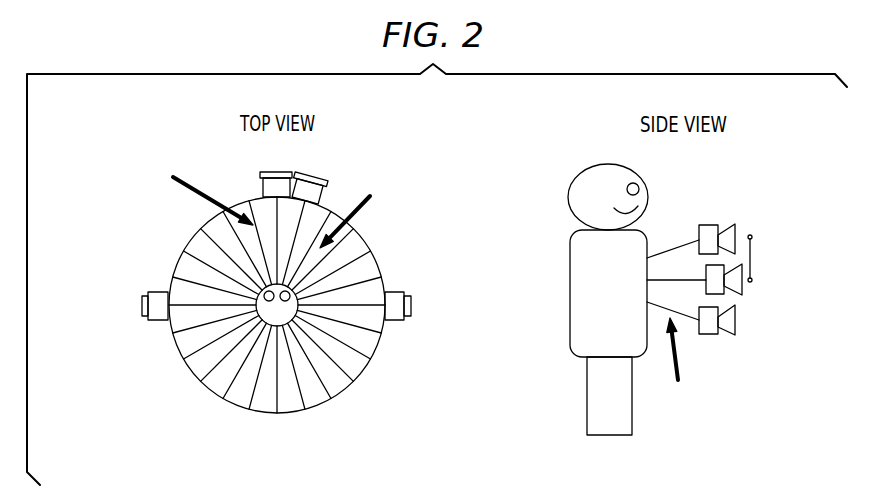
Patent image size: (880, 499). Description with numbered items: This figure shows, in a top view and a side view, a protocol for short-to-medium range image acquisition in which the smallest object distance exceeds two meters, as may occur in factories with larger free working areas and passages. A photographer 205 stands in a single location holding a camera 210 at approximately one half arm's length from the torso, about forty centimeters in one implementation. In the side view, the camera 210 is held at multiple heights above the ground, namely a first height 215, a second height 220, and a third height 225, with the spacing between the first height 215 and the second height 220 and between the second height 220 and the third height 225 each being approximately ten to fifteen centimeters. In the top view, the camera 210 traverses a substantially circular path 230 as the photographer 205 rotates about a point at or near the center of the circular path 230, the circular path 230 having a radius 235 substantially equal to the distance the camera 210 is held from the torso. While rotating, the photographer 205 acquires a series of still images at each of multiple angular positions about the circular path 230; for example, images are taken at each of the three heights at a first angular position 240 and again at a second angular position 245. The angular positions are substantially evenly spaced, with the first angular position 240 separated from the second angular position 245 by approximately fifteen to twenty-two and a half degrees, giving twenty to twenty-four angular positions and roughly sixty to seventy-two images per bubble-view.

The photographer 205 is at (287, 312).
The camera 210 is at (394, 291).
The first height 215 is at (752, 235).
The second height 220 is at (752, 283).
The third height 225 is at (737, 323).
The circular path 230 is at (183, 251).
The radius 235 is at (187, 188).
The first angular position 240 is at (331, 212).
The second angular position 245 is at (363, 235).